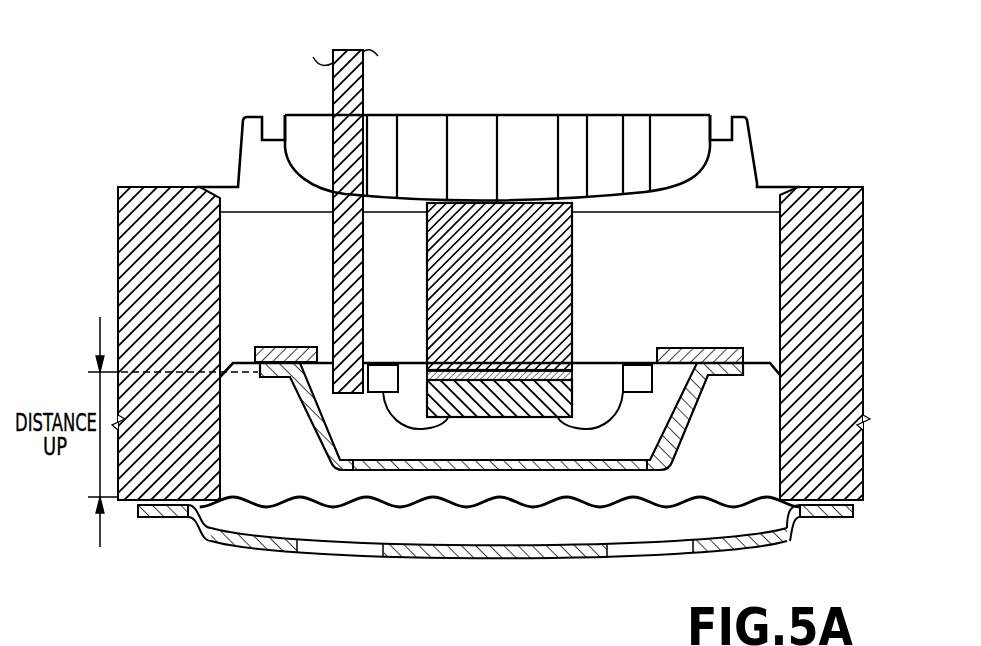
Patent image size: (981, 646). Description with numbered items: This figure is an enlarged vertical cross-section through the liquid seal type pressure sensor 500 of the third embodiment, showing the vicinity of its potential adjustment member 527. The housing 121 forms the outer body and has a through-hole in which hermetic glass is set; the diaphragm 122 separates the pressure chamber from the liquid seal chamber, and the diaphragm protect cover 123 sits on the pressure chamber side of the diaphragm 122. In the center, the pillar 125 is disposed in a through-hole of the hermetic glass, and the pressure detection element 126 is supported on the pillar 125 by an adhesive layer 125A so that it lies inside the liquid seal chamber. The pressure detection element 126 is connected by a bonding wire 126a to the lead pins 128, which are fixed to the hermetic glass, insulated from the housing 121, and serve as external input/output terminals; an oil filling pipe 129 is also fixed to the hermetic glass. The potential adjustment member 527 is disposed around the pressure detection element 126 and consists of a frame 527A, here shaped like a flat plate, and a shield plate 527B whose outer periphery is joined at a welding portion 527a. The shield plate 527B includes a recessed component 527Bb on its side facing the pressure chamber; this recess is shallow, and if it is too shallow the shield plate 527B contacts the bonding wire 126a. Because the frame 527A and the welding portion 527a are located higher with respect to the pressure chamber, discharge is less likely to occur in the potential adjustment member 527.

The liquid seal type pressure sensor 500 is at (617, 60).
The housing 121 is at (143, 205).
The diaphragm 122 is at (710, 502).
The diaphragm protect cover 123 is at (793, 541).
The pillar 125 is at (545, 215).
The adhesive layer 125A is at (533, 378).
The pressure detection element 126 is at (485, 400).
The bonding wire 126a is at (613, 420).
The lead pins 128 is at (383, 117).
The oil filling pipe 129 is at (477, 127).
The potential adjustment member 527 is at (722, 336).
The frame 527A is at (280, 352).
The welding portion 527a is at (262, 362).
The shield plate 527B is at (320, 440).
The recessed component 527Bb is at (500, 553).